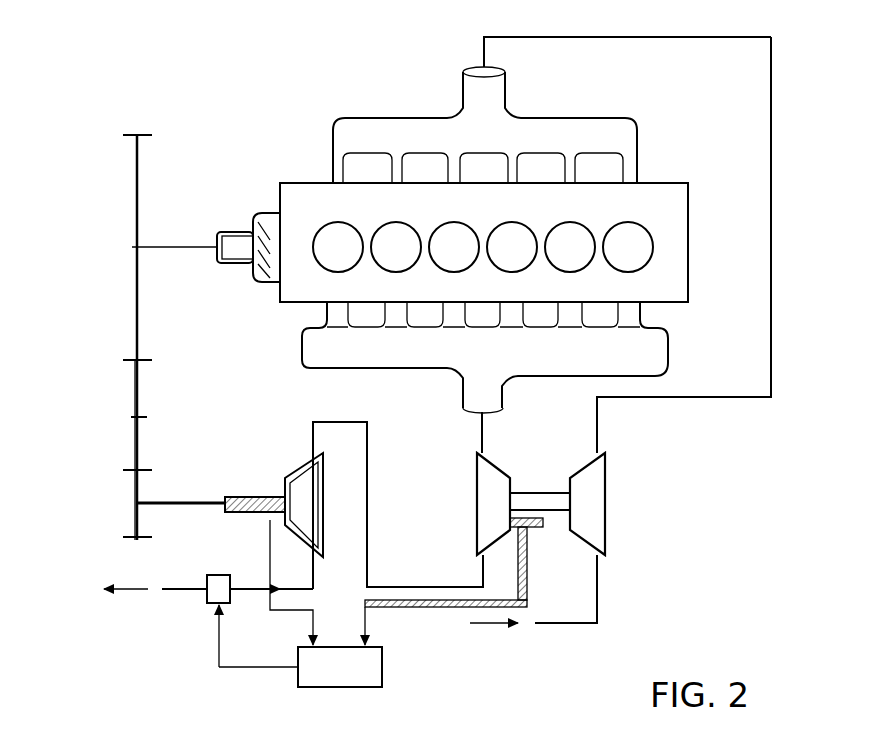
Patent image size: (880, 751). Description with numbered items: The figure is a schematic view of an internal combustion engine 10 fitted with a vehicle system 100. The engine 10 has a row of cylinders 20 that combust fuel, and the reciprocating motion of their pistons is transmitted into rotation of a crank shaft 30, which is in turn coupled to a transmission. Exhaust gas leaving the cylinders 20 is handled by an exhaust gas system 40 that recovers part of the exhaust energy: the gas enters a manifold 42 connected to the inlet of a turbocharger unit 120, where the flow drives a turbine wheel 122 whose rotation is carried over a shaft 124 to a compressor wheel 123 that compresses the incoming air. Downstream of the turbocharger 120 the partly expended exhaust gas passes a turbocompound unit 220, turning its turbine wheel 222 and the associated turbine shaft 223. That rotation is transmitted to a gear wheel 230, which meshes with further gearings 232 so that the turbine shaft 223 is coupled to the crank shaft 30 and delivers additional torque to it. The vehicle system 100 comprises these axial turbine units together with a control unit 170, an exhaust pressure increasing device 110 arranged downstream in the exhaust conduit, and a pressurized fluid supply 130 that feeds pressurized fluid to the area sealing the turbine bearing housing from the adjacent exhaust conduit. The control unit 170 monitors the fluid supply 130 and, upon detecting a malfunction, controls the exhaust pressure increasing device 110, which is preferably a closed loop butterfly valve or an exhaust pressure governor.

The internal combustion engine 10 is at (268, 74).
The cylinders 20 is at (349, 257).
The crank shaft 30 is at (185, 244).
The exhaust gas system 40 is at (658, 424).
The manifold 42 is at (645, 343).
The vehicle system 100 is at (452, 616).
The exhaust pressure increasing device 110 is at (205, 592).
The turbocharger unit 120 is at (655, 538).
The turbine wheel 122 is at (478, 484).
The compressor wheel 123 is at (608, 505).
The turbocharger shaft 124 is at (478, 557).
The pressurized fluid supply 130 is at (537, 527).
The control unit 170 is at (383, 670).
The turbocompound unit 220 is at (270, 463).
The turbine wheel 222 is at (300, 467).
The turbine shaft 223 is at (234, 497).
The gear wheel 230 is at (127, 535).
The further gearings 232 is at (125, 408).